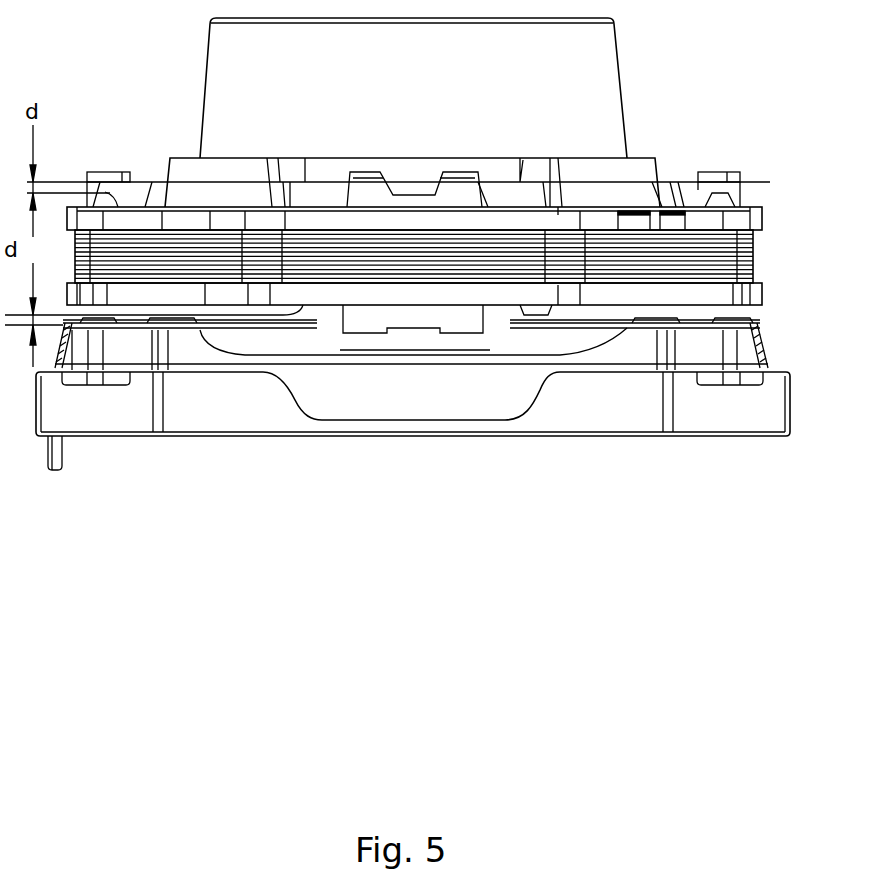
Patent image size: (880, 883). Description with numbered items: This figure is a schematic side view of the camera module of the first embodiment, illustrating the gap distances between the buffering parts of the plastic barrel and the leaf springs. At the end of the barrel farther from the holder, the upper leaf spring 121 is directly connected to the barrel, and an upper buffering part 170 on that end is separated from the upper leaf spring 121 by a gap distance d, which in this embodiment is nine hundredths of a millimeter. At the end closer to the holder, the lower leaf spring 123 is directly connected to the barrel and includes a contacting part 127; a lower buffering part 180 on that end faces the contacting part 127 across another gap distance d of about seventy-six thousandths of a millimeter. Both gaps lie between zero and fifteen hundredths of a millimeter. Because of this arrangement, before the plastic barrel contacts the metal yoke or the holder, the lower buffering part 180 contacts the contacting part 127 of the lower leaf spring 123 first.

The upper leaf spring 121 is at (153, 179).
The lower leaf spring 123 is at (262, 335).
The contacting part 127 is at (293, 328).
The upper buffering part 170 is at (110, 200).
The lower buffering part 180 is at (297, 310).